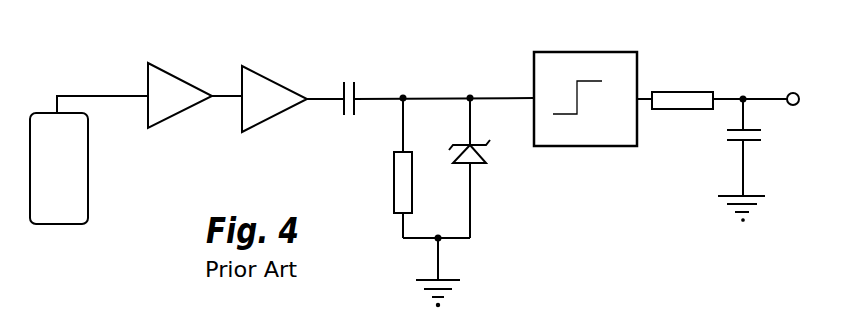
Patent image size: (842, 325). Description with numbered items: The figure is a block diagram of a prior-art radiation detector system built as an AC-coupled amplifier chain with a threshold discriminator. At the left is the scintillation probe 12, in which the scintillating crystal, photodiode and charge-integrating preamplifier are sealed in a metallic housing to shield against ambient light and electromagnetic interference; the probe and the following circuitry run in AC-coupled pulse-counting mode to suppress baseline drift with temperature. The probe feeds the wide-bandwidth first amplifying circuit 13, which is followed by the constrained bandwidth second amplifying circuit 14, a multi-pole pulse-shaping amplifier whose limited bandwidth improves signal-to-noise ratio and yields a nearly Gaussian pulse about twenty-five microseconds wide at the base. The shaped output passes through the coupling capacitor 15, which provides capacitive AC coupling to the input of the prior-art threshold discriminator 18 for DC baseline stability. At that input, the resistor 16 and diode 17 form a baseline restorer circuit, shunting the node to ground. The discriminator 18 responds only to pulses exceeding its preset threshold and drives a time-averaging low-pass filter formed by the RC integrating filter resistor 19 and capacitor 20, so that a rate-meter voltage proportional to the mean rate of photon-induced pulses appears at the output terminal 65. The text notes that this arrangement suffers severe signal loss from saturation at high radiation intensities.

The scintillation probe 12 is at (89, 173).
The wide-bandwidth first amplifying circuit 13 is at (180, 94).
The constrained bandwidth second amplifying circuit 14 is at (274, 97).
The coupling capacitor 15 is at (359, 90).
The resistor 16 is at (410, 168).
The diode 17 is at (471, 168).
The prior-art threshold discriminator 18 is at (585, 89).
The RC integrating filter resistor 19 is at (682, 89).
The RC integrating filter capacitor 20 is at (737, 160).
The output terminal 65 is at (795, 90).